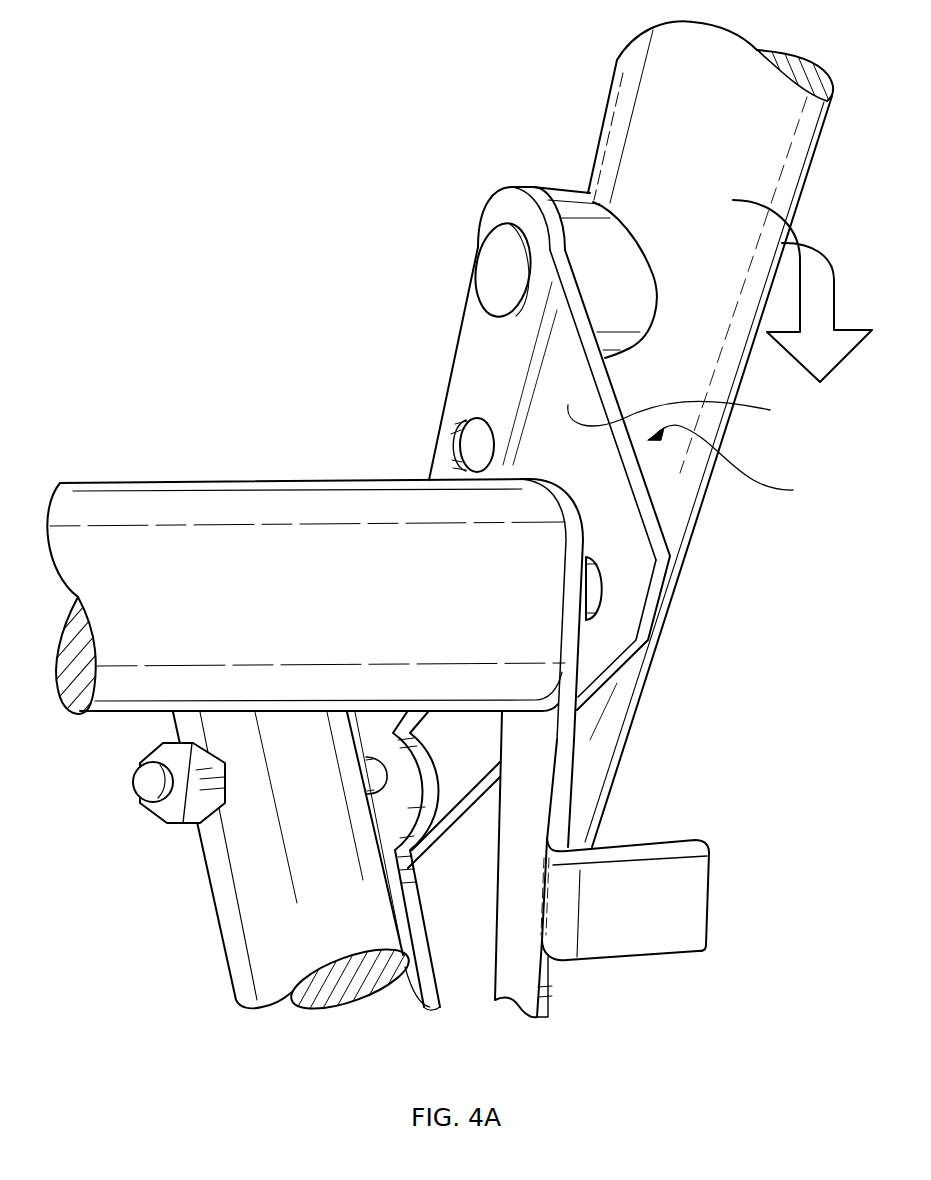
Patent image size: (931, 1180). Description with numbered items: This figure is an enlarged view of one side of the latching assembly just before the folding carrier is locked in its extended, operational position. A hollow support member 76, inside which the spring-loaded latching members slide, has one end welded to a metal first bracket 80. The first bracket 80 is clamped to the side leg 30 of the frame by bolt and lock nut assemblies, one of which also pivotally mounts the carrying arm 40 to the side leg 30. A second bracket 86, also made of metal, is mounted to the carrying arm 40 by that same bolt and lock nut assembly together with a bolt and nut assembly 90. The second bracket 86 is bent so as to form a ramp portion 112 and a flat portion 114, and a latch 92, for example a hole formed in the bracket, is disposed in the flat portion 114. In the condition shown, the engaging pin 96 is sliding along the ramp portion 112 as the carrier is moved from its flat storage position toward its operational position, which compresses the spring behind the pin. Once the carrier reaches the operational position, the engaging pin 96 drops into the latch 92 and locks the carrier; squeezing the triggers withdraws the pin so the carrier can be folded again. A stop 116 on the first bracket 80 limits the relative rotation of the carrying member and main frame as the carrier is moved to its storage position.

The carrying arm 40 is at (677, 103).
The bolt and nut assembly 90 is at (490, 257).
The flat portion 114 is at (475, 342).
The latch 92 is at (470, 445).
The hollow support member 76 is at (210, 481).
The ramp portion 112 is at (693, 412).
The second bracket 86 is at (736, 464).
The engaging pin 96 is at (597, 582).
The first bracket 80 is at (523, 777).
The side leg 30 is at (260, 908).
The stop 116 is at (658, 933).